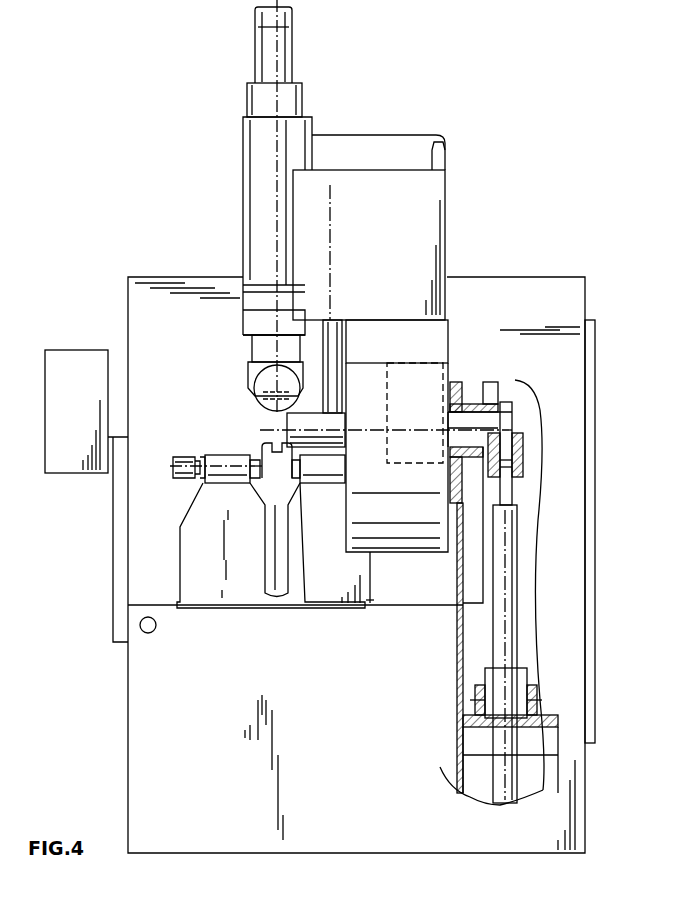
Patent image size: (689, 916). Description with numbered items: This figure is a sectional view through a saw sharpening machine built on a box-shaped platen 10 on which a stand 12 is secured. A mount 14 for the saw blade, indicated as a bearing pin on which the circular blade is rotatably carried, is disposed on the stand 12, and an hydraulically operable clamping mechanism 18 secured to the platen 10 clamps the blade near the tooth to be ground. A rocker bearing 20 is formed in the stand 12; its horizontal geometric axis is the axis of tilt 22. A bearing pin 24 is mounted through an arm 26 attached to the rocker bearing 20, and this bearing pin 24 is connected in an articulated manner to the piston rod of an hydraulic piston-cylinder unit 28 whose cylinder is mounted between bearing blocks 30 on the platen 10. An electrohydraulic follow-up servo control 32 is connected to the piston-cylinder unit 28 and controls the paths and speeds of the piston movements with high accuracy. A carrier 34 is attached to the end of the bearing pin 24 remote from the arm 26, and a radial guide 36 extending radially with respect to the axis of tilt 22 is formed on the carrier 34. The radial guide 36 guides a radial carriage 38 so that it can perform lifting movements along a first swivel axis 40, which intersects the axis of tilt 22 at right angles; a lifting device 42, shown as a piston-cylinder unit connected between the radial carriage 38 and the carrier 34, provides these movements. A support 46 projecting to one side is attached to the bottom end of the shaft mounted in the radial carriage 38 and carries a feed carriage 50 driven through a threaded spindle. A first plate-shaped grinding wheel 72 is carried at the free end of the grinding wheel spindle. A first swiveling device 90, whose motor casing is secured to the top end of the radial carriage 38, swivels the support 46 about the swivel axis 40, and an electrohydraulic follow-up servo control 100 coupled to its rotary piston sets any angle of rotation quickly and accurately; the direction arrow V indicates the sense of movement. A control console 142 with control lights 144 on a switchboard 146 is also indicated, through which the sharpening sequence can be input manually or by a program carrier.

The platen 10 is at (160, 732).
The stand 12 is at (570, 295).
The mount 14 is at (300, 423).
The clamping mechanism 18 is at (253, 608).
The rocker bearing 20 is at (476, 392).
The axis of tilt 22 is at (422, 425).
The bearing pin 24 is at (487, 424).
The arm 26 is at (527, 457).
The hydraulic piston-cylinder unit 28 is at (510, 548).
The bearing blocks 30 is at (545, 718).
The electrohydraulic follow-up servo control 32 is at (520, 676).
The carrier 34 is at (440, 330).
The radial guide 36 is at (315, 150).
The radial carriage 38 is at (262, 178).
The first swivel axis 40 is at (258, 230).
The lifting device 42 is at (352, 345).
The support 46 is at (252, 325).
The feed carriage 50 is at (262, 347).
The first grinding wheel 72 is at (268, 413).
The first swiveling device 90 is at (306, 93).
The electrohydraulic follow-up servo control 100 is at (285, 42).
The control console 142 is at (430, 208).
The control lights 144 is at (438, 158).
The switchboard 146 is at (75, 470).
The direction V is at (246, 366).